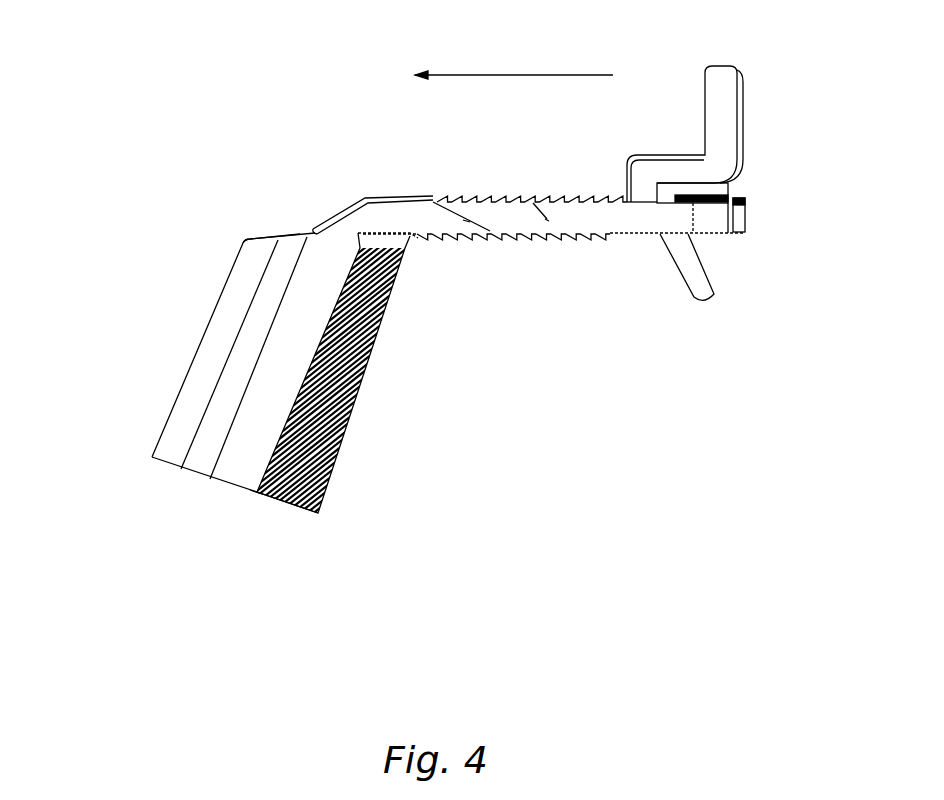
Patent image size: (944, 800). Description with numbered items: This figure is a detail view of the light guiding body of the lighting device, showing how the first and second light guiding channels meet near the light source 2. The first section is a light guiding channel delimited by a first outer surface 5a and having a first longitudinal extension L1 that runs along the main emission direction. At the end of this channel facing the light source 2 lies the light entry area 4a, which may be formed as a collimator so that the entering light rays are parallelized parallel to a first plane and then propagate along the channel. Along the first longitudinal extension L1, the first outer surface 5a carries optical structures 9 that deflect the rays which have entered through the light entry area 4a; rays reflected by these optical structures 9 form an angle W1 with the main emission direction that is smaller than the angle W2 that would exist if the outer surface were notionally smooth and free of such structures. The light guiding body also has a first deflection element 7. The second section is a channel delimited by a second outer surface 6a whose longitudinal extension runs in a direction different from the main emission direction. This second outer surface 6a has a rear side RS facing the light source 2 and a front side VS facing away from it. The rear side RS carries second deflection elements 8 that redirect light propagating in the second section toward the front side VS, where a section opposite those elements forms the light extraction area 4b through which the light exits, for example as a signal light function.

The light source 2 is at (740, 198).
The light entry area 4a is at (730, 234).
The light extraction area 4b is at (217, 405).
The first outer surface 5a is at (437, 203).
The second outer surface 6a is at (405, 245).
The first deflection element 7 is at (320, 230).
The second deflection elements 8 is at (273, 502).
The optical structures 9 is at (533, 203).
The front side VS is at (243, 240).
The rear side RS is at (318, 518).
The angle w1 W1 is at (463, 220).
The angle w2 W2 is at (547, 219).
The first longitudinal extension L1 is at (514, 49).